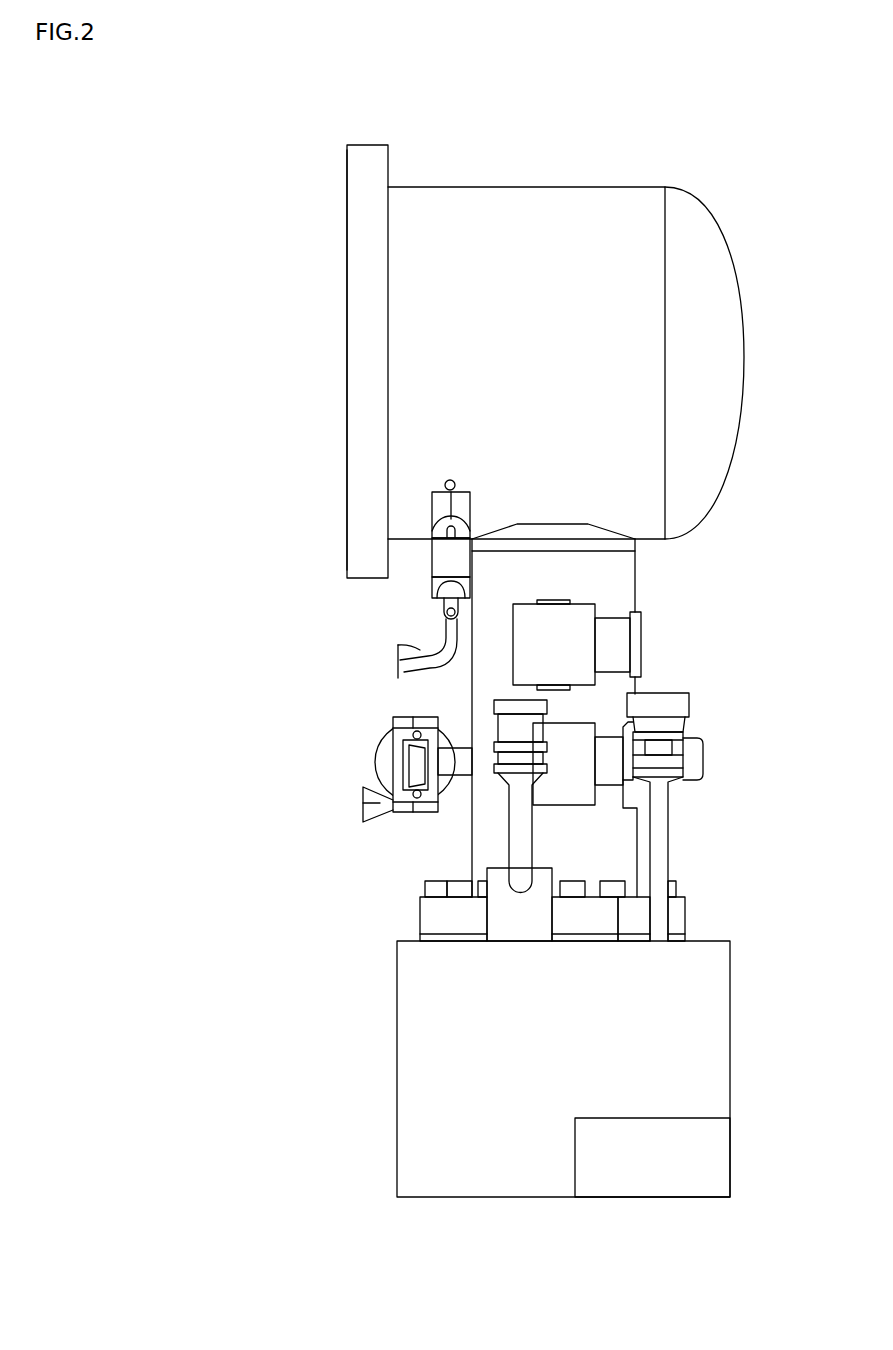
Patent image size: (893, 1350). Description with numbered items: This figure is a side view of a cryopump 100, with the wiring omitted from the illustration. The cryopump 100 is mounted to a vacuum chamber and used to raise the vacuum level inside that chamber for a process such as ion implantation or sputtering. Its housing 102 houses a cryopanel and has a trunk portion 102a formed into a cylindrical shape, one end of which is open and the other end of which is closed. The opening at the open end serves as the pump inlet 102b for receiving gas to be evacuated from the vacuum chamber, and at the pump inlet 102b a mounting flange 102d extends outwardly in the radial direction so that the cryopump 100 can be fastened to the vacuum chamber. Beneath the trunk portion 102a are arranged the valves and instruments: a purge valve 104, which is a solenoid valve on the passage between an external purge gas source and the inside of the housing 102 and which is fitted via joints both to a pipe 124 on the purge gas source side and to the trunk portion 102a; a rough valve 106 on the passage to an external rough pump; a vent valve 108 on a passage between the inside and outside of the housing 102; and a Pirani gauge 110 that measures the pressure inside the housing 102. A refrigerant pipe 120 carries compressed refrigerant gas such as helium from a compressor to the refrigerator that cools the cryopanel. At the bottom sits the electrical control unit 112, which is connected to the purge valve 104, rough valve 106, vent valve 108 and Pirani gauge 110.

The cryopump 100 is at (570, 1304).
The housing 102 is at (605, 573).
The trunk portion 102a is at (619, 205).
The pump inlet 102b is at (347, 240).
The mounting flange 102d is at (370, 165).
The purge valve 104 is at (443, 558).
The rough valve 106 is at (568, 624).
The vent valve 108 is at (567, 790).
The Pirani gauge 110 is at (407, 742).
The electrical control unit 112 is at (439, 1181).
The refrigerant pipe 120 is at (517, 830).
The pipe 124 is at (420, 650).